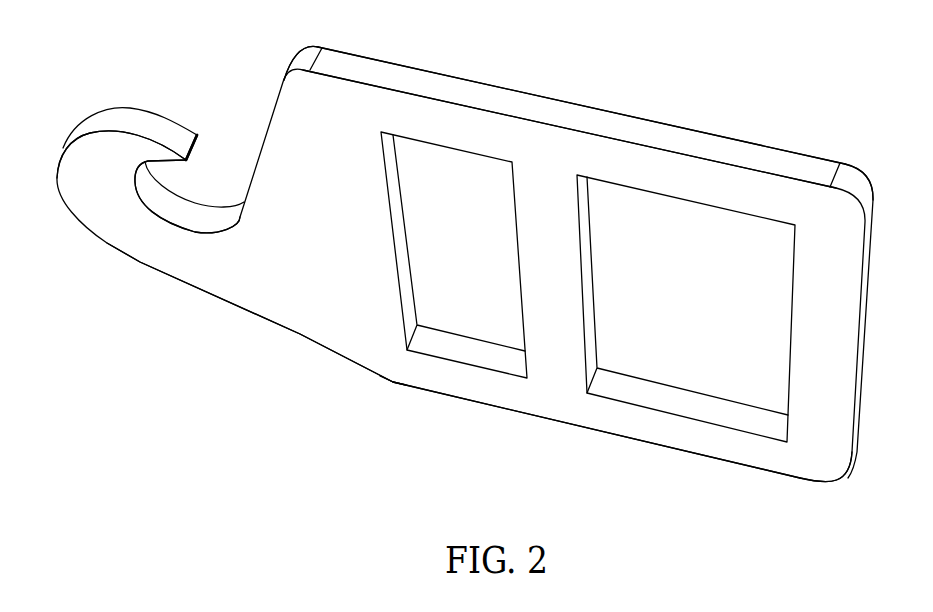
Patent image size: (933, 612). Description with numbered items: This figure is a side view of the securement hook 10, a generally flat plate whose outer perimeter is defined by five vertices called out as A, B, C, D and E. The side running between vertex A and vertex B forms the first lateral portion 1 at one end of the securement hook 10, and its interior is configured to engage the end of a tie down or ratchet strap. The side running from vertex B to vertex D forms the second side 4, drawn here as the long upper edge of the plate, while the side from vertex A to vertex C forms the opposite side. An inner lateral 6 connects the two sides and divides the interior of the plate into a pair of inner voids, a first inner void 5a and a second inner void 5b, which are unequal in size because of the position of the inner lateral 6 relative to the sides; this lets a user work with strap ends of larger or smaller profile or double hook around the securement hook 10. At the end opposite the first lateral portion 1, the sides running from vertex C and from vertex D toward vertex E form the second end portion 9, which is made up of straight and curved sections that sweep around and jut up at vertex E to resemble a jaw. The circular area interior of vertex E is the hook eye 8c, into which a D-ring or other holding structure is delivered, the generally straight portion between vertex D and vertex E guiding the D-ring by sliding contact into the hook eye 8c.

The first lateral portion 1 is at (823, 337).
The second side 4 is at (322, 38).
The first inner void 5a is at (688, 362).
The second inner void 5b is at (468, 308).
The inner lateral 6 is at (557, 373).
The hook eye 8c is at (214, 173).
The second end portion 9 is at (323, 260).
The securement hook 10 is at (201, 419).
The vertex A is at (298, 53).
The vertex B is at (858, 177).
The vertex C is at (397, 384).
The vertex D is at (848, 481).
The vertex E is at (198, 139).